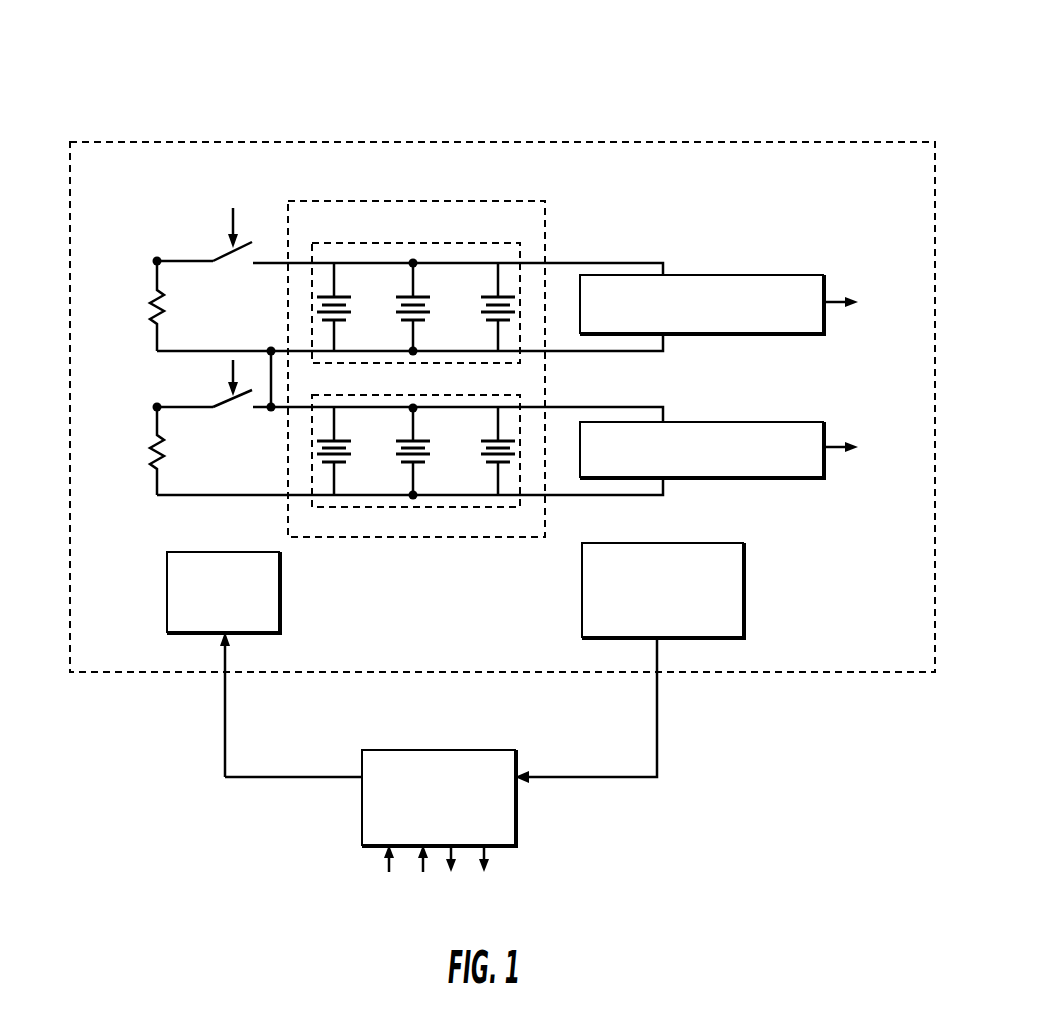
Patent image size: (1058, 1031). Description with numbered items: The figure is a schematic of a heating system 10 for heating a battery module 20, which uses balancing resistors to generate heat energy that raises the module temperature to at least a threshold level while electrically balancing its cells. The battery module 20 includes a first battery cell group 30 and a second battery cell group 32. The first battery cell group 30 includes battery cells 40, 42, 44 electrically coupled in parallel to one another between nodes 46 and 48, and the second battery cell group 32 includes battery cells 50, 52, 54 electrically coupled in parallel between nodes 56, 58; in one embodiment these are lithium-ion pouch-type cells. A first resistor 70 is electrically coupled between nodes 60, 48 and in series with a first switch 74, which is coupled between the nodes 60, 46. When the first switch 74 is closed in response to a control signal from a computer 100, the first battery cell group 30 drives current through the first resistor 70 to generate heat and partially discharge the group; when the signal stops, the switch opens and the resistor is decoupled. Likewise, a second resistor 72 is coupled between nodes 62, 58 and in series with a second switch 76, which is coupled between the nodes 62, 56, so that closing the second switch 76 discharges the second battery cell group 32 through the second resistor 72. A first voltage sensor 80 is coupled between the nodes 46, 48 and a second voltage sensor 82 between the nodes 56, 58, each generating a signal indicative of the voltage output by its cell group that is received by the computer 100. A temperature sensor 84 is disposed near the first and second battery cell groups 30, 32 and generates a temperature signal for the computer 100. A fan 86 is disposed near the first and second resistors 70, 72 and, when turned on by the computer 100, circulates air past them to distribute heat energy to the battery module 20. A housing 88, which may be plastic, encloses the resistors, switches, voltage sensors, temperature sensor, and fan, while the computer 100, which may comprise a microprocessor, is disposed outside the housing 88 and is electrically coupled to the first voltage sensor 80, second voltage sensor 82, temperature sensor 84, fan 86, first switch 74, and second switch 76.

The heating system 10 is at (874, 84).
The battery module 20 is at (542, 192).
The first battery cell group 30 is at (380, 243).
The second battery cell group 32 is at (373, 395).
The battery cell 40 is at (338, 297).
The battery cell 42 is at (421, 297).
The battery cell 44 is at (502, 296).
The node 46 is at (414, 262).
The node 48 is at (414, 350).
The battery cell 50 is at (342, 441).
The battery cell 52 is at (423, 441).
The battery cell 54 is at (508, 440).
The node 56 is at (414, 407).
The node 58 is at (414, 494).
The node 60 is at (156, 260).
The node 62 is at (156, 406).
The first resistor 70 is at (150, 307).
The second resistor 72 is at (150, 453).
The first switch 74 is at (212, 260).
The second switch 76 is at (228, 397).
The first voltage sensor 80 is at (763, 275).
The second voltage sensor 82 is at (763, 422).
The temperature sensor 84 is at (715, 543).
The fan 86 is at (279, 598).
The housing 88 is at (410, 142).
The computer 100 is at (435, 750).